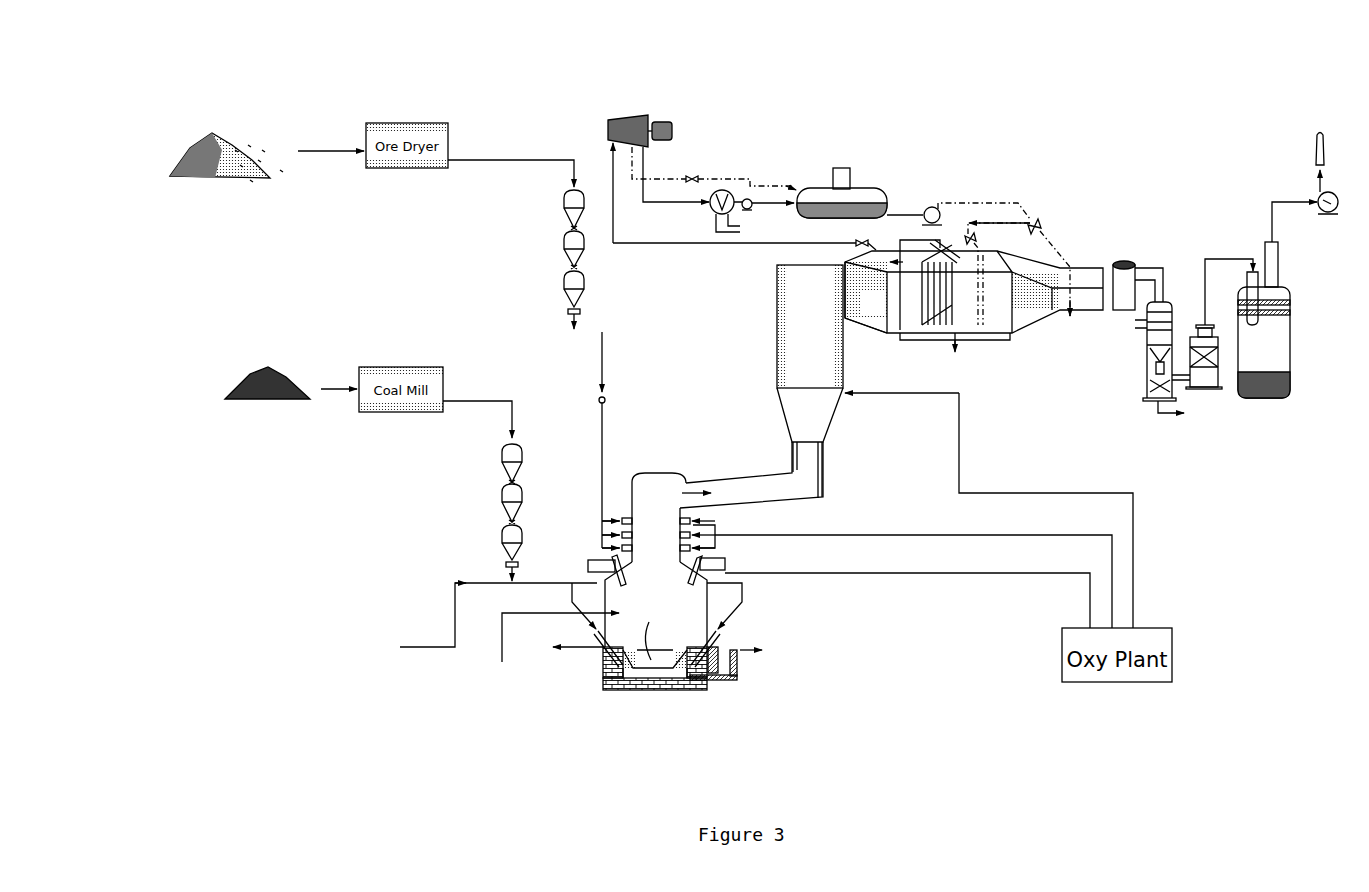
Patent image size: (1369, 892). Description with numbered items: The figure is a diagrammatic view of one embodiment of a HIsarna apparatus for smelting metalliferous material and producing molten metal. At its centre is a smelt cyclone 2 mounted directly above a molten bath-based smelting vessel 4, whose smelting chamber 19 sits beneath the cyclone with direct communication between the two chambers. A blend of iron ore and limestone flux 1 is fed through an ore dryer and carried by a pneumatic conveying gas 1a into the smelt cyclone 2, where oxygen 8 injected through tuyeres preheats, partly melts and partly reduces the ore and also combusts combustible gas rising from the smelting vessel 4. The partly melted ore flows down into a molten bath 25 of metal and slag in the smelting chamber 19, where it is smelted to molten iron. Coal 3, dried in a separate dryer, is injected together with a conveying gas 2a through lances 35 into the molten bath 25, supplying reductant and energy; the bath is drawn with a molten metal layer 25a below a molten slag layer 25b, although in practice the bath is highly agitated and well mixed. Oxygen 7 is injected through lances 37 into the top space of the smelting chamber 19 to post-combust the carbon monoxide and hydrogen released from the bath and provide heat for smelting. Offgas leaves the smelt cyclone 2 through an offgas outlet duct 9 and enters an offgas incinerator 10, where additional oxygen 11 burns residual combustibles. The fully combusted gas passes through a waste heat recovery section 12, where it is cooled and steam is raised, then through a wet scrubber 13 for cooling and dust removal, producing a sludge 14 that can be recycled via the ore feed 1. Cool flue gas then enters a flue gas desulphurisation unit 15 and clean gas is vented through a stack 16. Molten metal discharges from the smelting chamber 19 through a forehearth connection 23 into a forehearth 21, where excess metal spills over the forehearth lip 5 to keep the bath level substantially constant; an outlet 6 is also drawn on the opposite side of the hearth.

The ore and flux feed 1 is at (330, 134).
The pneumatic conveying gas 1a is at (600, 332).
The coal 3 is at (339, 372).
The conveying gas 2a is at (561, 620).
The smelt cyclone 2 is at (660, 560).
The molten bath-based smelting vessel 4 is at (590, 553).
The oxygen lances 37 is at (702, 567).
The offgas outlet duct 9 is at (695, 492).
The offgas incinerator 10 is at (810, 381).
The waste heat recovery section 12 is at (990, 296).
The wet scrubber 13 is at (1147, 334).
The sludge 14 is at (1189, 414).
The flue gas desulphurisation unit 15 is at (1264, 320).
The stack 16 is at (1299, 163).
The additional oxygen 11 is at (1018, 493).
The oxygen to smelt cyclone 8 is at (907, 535).
The oxygen to smelting chamber 7 is at (907, 573).
The coal injection lances 35 is at (716, 634).
The smelting chamber 19 is at (551, 651).
The slag outlet 6 is at (565, 651).
The forehearth lip 5 is at (762, 651).
The forehearth 21 is at (724, 663).
The forehearth connection 23 is at (703, 673).
The molten bath 25 is at (641, 673).
The molten metal layer 25a is at (663, 676).
The molten slag layer 25b is at (668, 633).